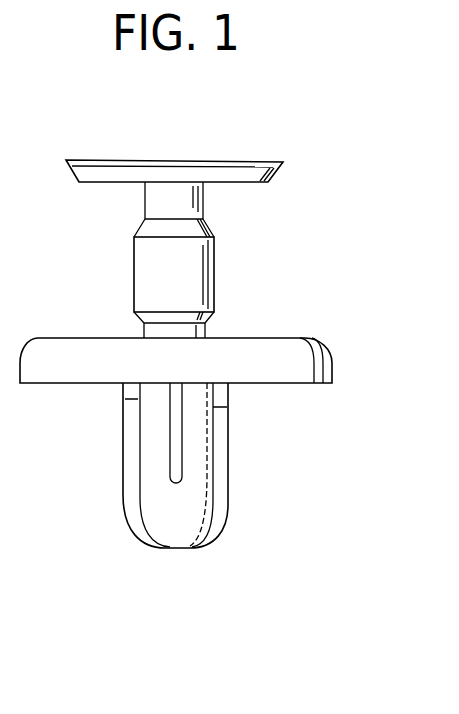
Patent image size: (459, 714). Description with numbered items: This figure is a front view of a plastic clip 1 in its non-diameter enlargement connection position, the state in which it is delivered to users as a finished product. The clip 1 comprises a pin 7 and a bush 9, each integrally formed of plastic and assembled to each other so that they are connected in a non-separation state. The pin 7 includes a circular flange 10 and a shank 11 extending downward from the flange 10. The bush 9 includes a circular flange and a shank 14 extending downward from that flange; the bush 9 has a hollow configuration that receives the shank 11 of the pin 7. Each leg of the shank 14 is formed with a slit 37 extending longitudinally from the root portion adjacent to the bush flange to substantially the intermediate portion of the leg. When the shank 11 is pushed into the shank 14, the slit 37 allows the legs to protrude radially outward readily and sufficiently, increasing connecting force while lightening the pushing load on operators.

The clip 1 is at (299, 150).
The pin 7 is at (252, 263).
The flange 10 is at (115, 172).
The shank 11 is at (145, 280).
The bush 9 is at (265, 456).
The shank 14 is at (130, 455).
The slit 37 is at (174, 455).